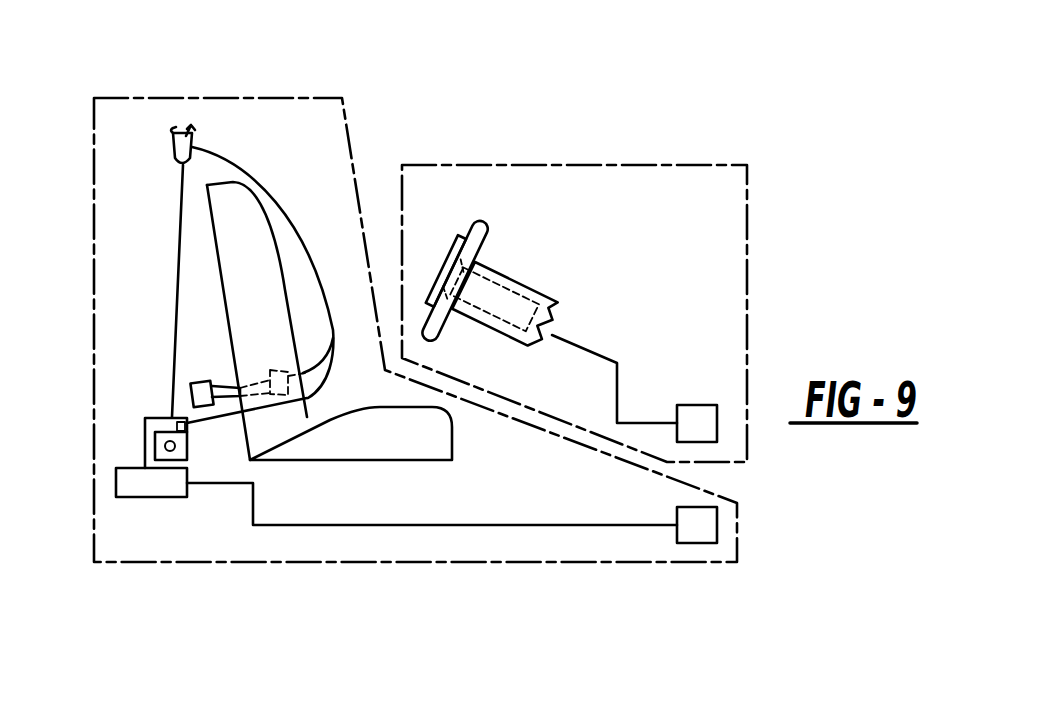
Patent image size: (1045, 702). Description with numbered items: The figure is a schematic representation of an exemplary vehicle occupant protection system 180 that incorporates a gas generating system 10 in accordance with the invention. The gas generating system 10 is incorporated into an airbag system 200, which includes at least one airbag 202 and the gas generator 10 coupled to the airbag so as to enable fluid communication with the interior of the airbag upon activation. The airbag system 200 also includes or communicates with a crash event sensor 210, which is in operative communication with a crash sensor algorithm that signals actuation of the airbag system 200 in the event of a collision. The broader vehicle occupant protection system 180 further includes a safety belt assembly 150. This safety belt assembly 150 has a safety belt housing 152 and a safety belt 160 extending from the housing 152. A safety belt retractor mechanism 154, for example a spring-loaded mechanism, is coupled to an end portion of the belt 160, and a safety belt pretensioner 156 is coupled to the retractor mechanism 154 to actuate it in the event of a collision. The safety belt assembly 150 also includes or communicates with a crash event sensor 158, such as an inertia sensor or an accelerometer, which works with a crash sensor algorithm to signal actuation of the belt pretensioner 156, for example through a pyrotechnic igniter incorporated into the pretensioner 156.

The gas generating system 10 is at (518, 287).
The safety belt assembly 150 is at (218, 98).
The safety belt housing 152 is at (155, 454).
The safety belt retractor mechanism 154 is at (145, 418).
The safety belt pretensioner 156 is at (140, 497).
The crash event sensor 158 is at (693, 543).
The safety belt 160 is at (228, 163).
The vehicle occupant protection system 180 is at (488, 86).
The airbag system 200 is at (690, 165).
The airbag 202 is at (473, 262).
The crash event sensor 210 is at (695, 405).